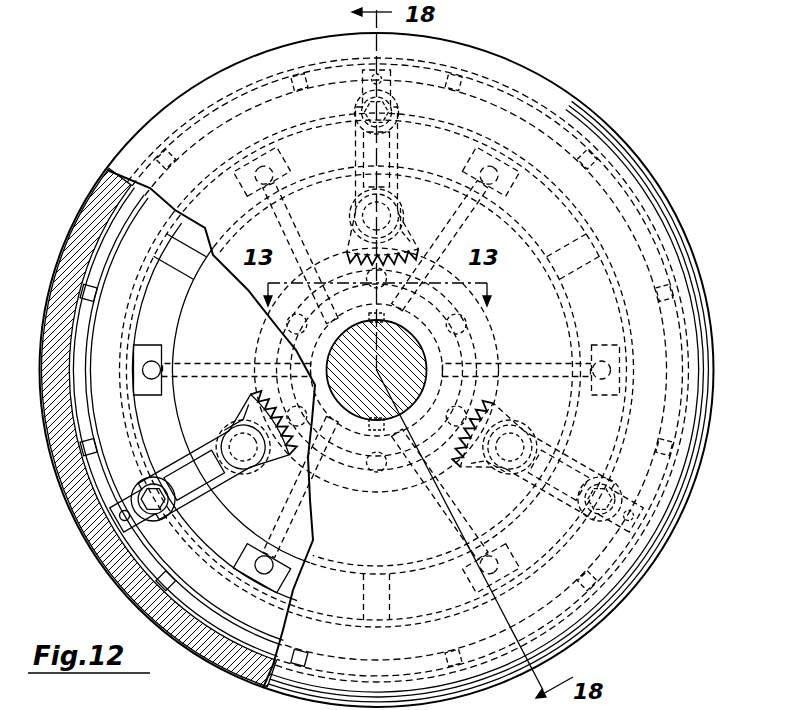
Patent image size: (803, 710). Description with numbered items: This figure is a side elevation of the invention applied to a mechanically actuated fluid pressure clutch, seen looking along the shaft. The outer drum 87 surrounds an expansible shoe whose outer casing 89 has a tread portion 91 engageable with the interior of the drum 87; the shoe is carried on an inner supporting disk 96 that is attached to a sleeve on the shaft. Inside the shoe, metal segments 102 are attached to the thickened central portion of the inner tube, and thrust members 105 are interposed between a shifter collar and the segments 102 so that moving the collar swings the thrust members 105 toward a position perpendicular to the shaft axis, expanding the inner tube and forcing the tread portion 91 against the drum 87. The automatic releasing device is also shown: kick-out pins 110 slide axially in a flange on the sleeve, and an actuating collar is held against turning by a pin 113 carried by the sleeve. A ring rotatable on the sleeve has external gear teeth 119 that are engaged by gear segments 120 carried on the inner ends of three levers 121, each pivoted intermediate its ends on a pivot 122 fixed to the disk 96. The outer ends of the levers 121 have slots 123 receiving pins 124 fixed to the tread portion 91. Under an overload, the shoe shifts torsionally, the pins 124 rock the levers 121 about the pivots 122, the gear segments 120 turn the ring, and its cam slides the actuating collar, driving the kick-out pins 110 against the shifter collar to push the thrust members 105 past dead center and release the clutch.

The outer drum 87 is at (70, 250).
The tread portion 91 is at (73, 355).
The outer casing 89 is at (96, 425).
The inner supporting disk 96 is at (214, 342).
The metal segments 102 is at (236, 412).
The thrust members 105 is at (373, 313).
The kick-out pins 110 is at (302, 206).
The pin 113 is at (376, 370).
The external gear teeth 119 is at (264, 366).
The gear segments 120 is at (408, 218).
The levers 121 is at (398, 203).
The pivots 122 is at (355, 106).
The slots 123 is at (400, 105).
The pins 124 is at (360, 73).